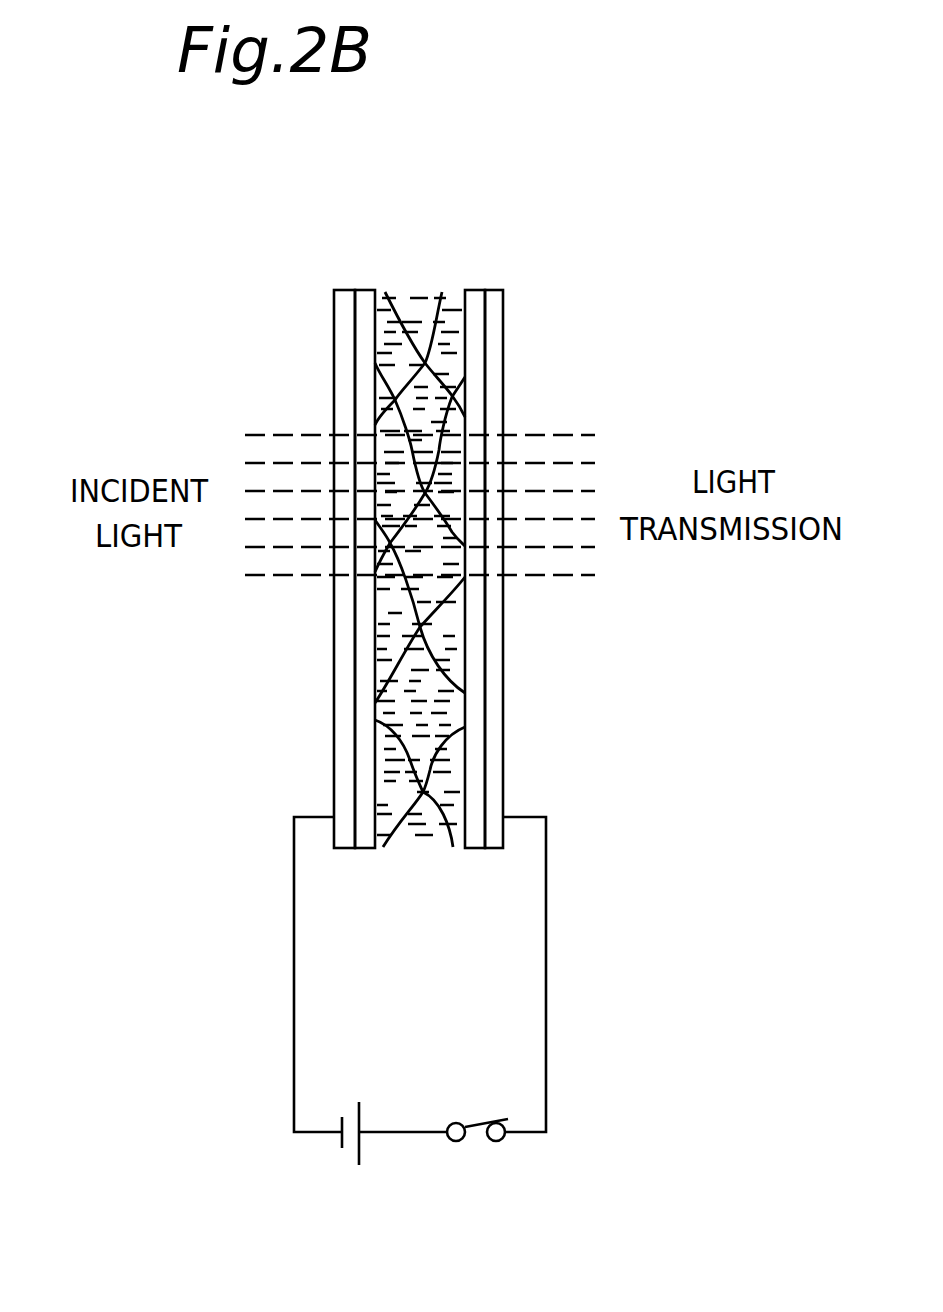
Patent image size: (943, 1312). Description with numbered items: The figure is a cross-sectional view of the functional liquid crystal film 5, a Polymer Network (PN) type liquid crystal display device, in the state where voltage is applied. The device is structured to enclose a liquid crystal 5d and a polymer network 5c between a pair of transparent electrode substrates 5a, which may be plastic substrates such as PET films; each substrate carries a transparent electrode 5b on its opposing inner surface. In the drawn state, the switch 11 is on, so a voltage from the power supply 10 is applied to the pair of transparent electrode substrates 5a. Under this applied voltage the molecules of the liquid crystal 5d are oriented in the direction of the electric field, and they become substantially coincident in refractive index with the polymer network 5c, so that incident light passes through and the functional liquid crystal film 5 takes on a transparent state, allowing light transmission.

The functional liquid crystal film 5 is at (505, 252).
The transparent electrode substrate 5a is at (345, 372).
The transparent electrode 5b is at (368, 288).
The polymer network 5c is at (410, 297).
The liquid crystal 5d is at (427, 837).
The power supply 10 is at (355, 1147).
The switch 11 is at (480, 1142).